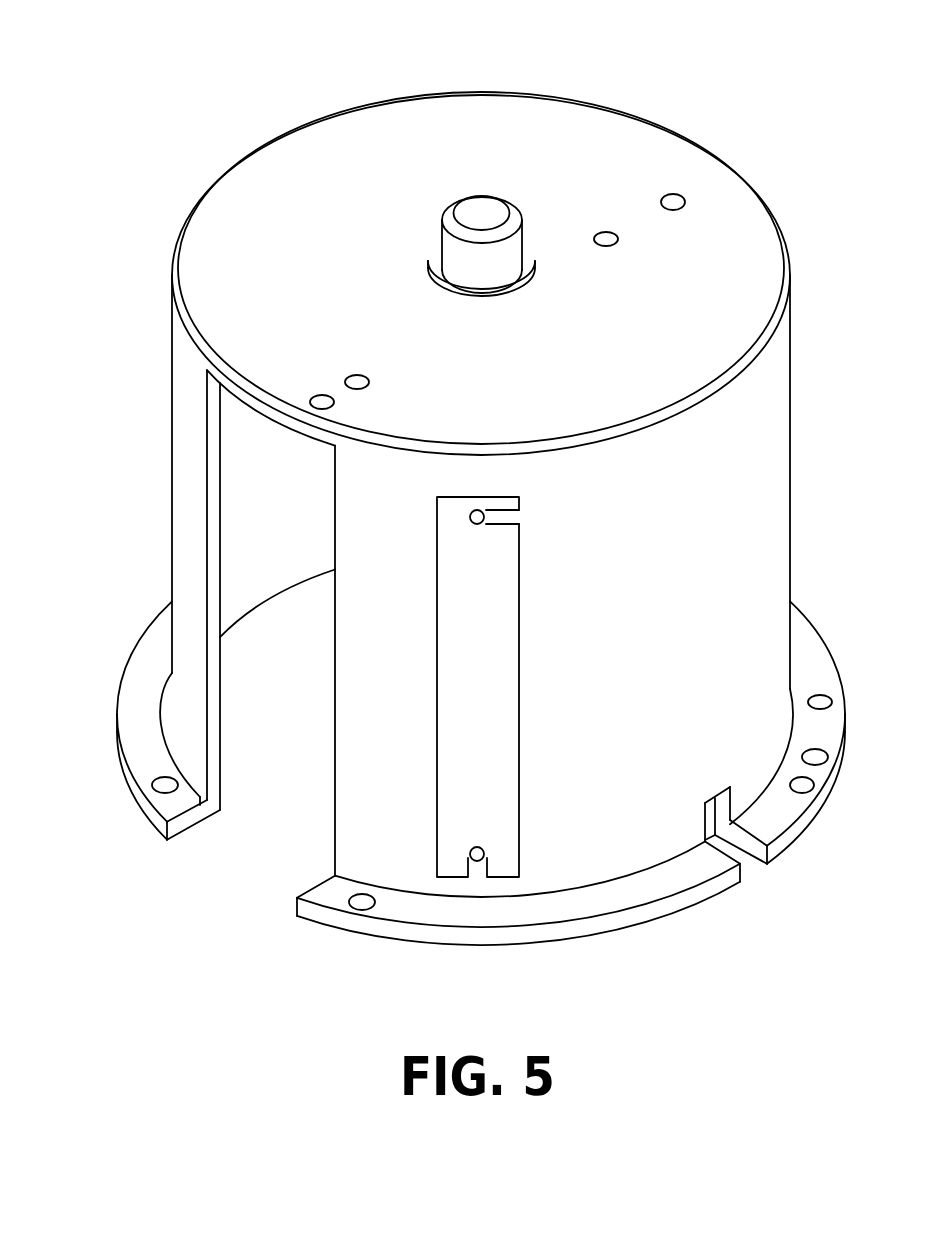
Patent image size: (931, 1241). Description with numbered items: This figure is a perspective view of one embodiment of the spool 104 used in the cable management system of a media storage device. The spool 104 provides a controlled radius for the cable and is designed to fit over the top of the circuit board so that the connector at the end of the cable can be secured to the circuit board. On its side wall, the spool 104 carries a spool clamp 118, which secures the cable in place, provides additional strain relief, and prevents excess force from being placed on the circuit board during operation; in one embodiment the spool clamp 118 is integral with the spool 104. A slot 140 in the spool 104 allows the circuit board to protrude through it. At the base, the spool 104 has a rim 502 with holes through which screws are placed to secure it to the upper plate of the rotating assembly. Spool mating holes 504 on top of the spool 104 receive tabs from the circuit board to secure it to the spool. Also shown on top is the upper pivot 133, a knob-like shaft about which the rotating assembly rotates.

The spool 104 is at (783, 93).
The upper pivot 133 is at (470, 209).
The spool mating holes 504 is at (673, 202).
The spool clamp 118 is at (495, 697).
The slot 140 is at (240, 803).
The rim 502 is at (785, 812).